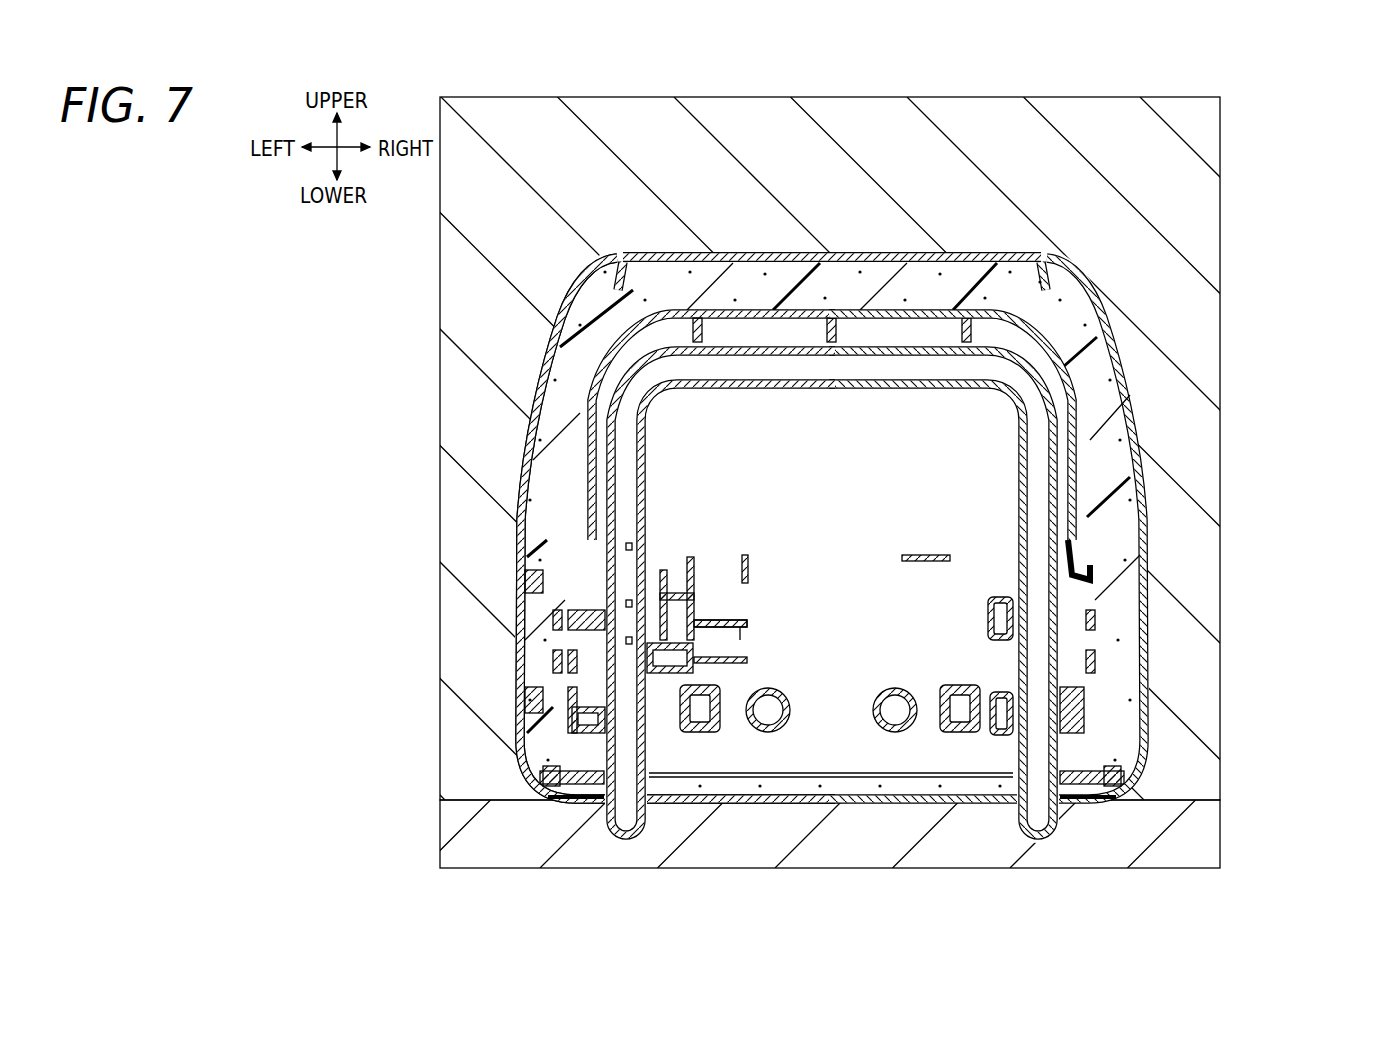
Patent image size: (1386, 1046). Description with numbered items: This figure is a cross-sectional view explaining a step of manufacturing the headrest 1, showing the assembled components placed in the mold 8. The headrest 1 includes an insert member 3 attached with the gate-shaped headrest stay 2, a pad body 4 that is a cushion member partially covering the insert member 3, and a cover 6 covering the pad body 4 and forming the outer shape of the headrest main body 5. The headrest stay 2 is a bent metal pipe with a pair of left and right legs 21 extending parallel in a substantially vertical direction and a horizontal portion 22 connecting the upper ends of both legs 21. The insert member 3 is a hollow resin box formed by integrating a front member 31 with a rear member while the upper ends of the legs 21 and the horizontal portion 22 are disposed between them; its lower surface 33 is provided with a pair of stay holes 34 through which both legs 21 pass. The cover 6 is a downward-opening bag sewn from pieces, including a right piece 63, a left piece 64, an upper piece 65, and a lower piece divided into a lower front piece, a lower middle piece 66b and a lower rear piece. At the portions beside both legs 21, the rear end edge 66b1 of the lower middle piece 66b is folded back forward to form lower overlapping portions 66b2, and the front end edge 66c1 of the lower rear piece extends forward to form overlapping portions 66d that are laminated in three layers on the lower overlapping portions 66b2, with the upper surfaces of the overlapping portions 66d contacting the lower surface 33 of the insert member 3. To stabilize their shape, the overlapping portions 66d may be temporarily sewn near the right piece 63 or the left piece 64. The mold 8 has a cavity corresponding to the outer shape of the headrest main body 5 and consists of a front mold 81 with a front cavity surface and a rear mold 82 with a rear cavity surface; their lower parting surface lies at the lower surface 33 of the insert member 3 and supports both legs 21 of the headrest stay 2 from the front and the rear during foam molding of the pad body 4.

The headrest 1 is at (1000, 222).
The headrest stay 2 is at (1057, 603).
The insert member 3 is at (1137, 443).
The pad body 4 is at (1070, 333).
The headrest main body 5 is at (850, 252).
The cover 6 is at (1140, 468).
The mold 8 is at (693, 485).
The legs 21 is at (931, 635).
The horizontal portion 22 is at (887, 347).
The front member 31 is at (1147, 543).
The lower surface 33 is at (870, 803).
The stay holes 34 is at (647, 803).
The right piece 63 is at (1143, 507).
The left piece 64 is at (540, 432).
The upper piece 65 is at (735, 252).
The lower middle piece 66b is at (755, 803).
The rear end edge 66b1 is at (548, 803).
The lower overlapping portions 66b2 is at (570, 803).
The front end edge 66c1 is at (540, 780).
The overlapping portions 66d is at (548, 770).
The front mold 81 is at (1203, 703).
The rear mold 82 is at (822, 837).